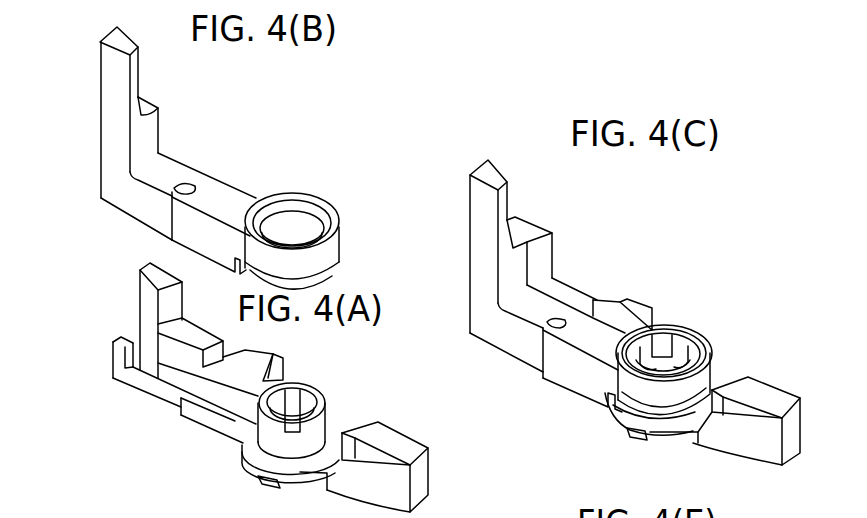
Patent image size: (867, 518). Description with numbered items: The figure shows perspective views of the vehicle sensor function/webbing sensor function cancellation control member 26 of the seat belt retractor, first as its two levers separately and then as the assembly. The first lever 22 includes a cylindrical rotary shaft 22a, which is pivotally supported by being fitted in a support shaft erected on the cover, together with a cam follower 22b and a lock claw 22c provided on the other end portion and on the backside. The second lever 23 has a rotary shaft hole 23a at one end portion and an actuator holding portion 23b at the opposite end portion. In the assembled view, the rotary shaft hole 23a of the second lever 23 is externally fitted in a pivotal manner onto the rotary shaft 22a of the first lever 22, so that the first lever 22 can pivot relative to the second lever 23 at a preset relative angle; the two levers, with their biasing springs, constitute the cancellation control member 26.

In FIG. 4A, the first lever 22 is at (261, 387).
In FIG. 4C, the first lever 22 is at (663, 349).
In FIG. 4A, the rotary shaft 22a is at (323, 420).
In FIG. 4C, the rotary shaft 22a is at (612, 403).
In FIG. 4A, the cam follower 22b is at (283, 353).
In FIG. 4C, the cam follower 22b is at (640, 310).
In FIG. 4A, the lock claw 22c is at (133, 395).
In FIG. 4B, the second lever 23 is at (184, 158).
In FIG. 4C, the second lever 23 is at (586, 324).
In FIG. 4B, the rotary shaft hole 23a is at (306, 200).
In FIG. 4C, the rotary shaft hole 23a is at (690, 392).
In FIG. 4B, the actuator holding portion 23b is at (108, 172).
In FIG. 4C, the actuator holding portion 23b is at (487, 291).
In FIG. 4A, the vehicle sensor function/webbing sensor function cancellation control member 26 is at (261, 387).
In FIG. 4C, the vehicle sensor function/webbing sensor function cancellation control member 26 is at (606, 324).